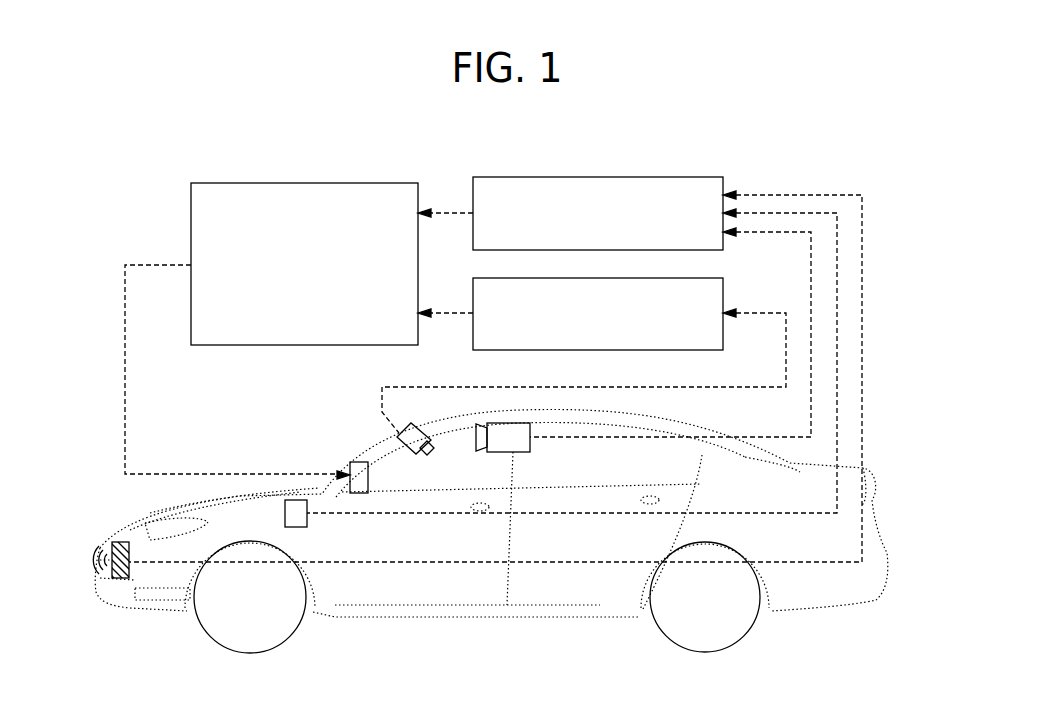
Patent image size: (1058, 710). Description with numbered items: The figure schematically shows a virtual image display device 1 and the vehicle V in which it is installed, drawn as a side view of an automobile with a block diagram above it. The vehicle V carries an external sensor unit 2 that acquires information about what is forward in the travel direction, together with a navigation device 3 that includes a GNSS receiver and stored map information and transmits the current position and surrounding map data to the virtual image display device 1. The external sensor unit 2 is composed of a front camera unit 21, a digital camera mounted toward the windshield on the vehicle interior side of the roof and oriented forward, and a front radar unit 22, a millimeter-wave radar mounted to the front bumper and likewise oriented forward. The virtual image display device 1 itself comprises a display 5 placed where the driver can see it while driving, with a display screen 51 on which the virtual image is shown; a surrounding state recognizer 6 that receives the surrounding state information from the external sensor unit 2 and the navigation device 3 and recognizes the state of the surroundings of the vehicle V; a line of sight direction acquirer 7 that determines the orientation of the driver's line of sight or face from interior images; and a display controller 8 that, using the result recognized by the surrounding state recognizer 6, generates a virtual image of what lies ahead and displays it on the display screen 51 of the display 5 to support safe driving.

The virtual image display device 1 is at (493, 341).
The external sensor unit 2 is at (97, 595).
The navigation device 3 is at (285, 513).
The display 5 is at (358, 462).
The display screen 51 is at (368, 478).
The surrounding state recognizer 6 is at (669, 186).
The line of sight direction acquirer 7 is at (722, 289).
The display controller 8 is at (350, 197).
The front camera unit 21 is at (531, 428).
The front radar unit 22 is at (122, 578).
The vehicle V is at (913, 514).